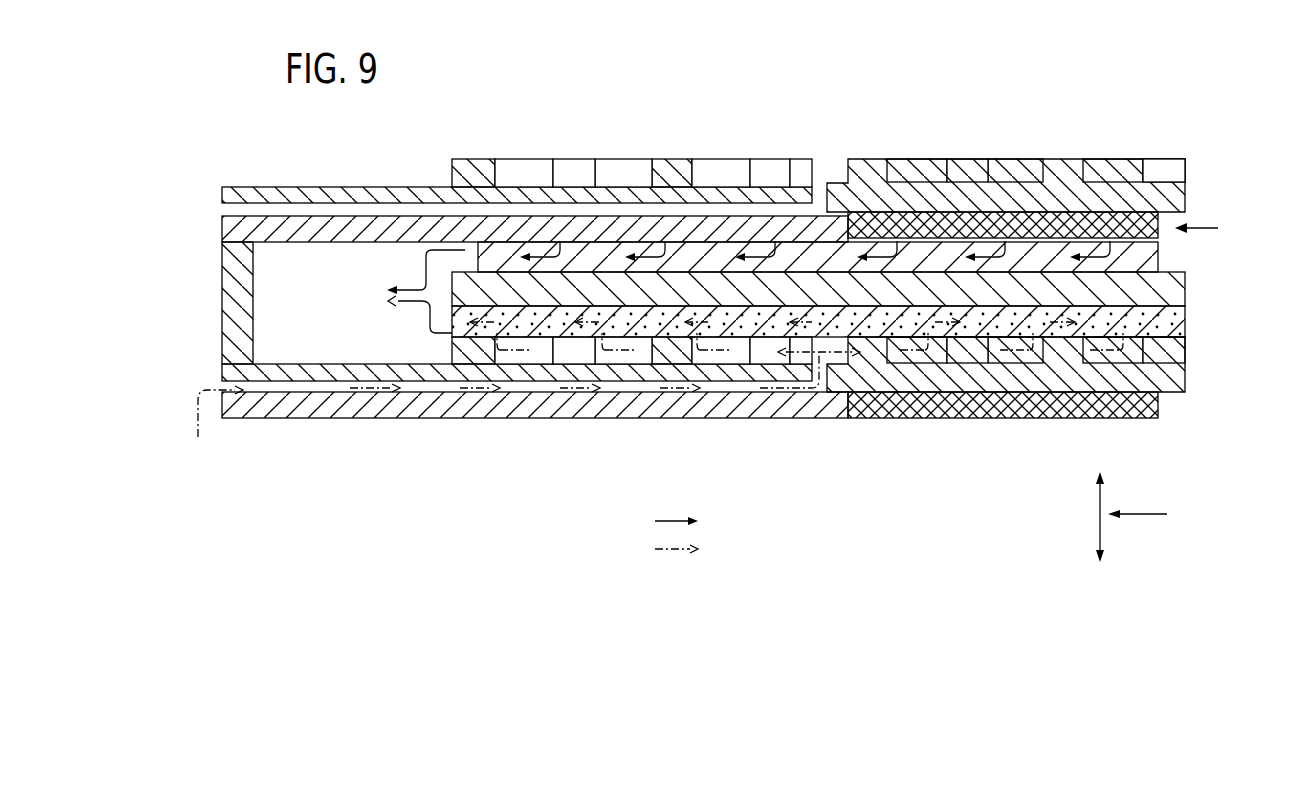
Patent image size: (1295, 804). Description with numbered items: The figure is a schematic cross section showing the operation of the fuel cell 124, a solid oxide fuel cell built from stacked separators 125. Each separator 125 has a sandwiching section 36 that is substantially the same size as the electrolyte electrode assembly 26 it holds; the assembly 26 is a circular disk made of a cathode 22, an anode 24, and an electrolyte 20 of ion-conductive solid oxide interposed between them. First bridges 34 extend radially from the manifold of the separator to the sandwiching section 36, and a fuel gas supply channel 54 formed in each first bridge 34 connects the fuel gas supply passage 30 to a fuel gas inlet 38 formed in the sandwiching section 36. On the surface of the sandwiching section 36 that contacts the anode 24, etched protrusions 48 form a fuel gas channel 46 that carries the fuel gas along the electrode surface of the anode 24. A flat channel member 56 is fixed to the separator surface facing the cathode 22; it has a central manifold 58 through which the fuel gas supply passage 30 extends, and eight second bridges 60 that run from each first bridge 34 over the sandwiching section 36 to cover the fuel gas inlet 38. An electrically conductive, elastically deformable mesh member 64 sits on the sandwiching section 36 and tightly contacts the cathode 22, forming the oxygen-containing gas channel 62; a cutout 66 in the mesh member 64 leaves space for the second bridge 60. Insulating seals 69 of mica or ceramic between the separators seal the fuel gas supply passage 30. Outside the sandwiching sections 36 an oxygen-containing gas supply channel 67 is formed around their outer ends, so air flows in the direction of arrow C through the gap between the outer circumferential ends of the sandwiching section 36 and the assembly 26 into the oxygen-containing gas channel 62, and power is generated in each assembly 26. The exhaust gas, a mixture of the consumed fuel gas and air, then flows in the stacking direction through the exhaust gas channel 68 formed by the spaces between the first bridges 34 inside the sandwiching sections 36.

The fuel cell 124 is at (440, 90).
The first bridge 34 is at (313, 196).
The fuel gas supply channel 54 is at (362, 212).
The channel member 56 is at (327, 252).
The manifold 58 is at (279, 245).
The second bridge 60 is at (388, 242).
The insulating seal 69 is at (237, 336).
The exhaust gas channel 68 is at (345, 356).
The fuel gas channel 46 is at (723, 167).
The protrusion 48 is at (572, 173).
The fuel gas inlet 38 is at (820, 188).
The oxygen-containing gas channel 62 is at (923, 224).
The sandwiching section 36 is at (1024, 174).
The separator 125 is at (1178, 176).
The mesh member 64 is at (1172, 218).
The oxygen-containing gas supply channel 67 is at (1198, 221).
The cutout 66 is at (858, 398).
The electrolyte 20 is at (667, 296).
The cathode 22 is at (708, 256).
The anode 24 is at (635, 329).
The electrolyte electrode assembly 26 is at (818, 367).
The fuel gas supply passage 30 is at (192, 350).